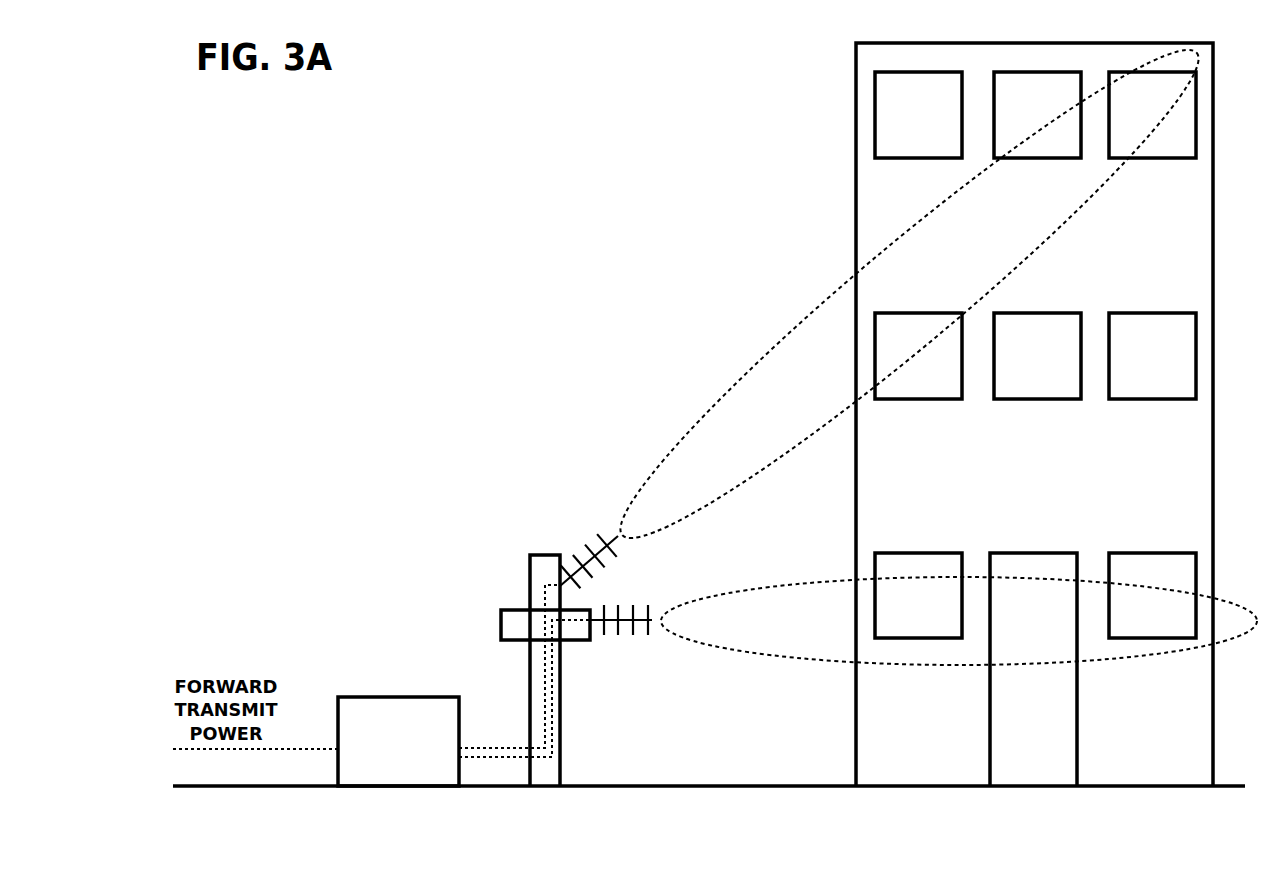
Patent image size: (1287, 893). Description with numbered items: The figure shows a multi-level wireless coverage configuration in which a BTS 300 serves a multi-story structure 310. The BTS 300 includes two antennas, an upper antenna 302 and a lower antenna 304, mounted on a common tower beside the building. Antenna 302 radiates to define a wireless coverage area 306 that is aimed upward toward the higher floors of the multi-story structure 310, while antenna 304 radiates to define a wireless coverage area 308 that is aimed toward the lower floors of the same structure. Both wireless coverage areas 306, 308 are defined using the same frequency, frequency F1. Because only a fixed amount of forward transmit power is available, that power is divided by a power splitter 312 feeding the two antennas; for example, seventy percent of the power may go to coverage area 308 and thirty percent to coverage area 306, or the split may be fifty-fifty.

The BTS 300 is at (510, 573).
The antenna 302 is at (570, 535).
The antenna 304 is at (643, 655).
The wireless coverage area 306 is at (778, 335).
The wireless coverage area 308 is at (837, 673).
The multi-story structure 310 is at (837, 125).
The power splitter 312 is at (347, 682).